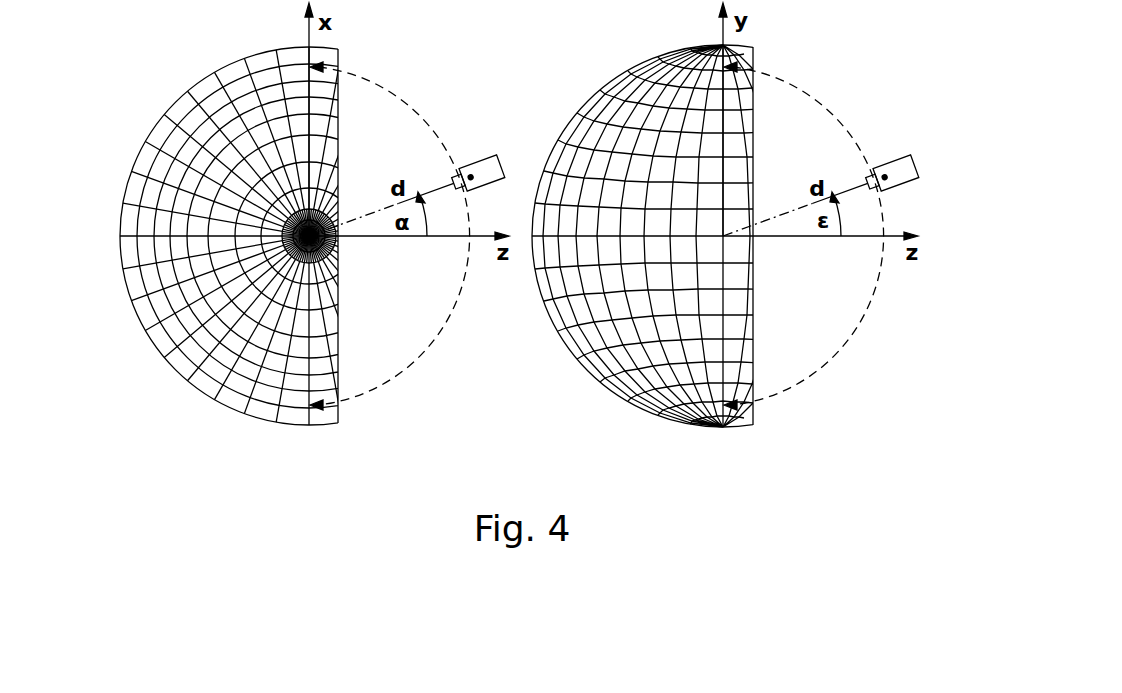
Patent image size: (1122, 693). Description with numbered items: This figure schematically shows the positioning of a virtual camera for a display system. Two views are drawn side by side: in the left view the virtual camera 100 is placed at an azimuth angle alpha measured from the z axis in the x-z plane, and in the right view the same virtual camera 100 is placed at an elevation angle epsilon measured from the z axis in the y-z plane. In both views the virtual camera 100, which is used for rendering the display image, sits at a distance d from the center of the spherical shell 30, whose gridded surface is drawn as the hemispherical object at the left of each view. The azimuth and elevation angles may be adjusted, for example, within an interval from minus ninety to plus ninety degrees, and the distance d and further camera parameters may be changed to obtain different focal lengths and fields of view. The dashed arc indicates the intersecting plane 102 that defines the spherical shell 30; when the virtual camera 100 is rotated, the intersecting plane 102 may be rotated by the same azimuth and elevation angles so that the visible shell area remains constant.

The spherical shell 30 is at (243, 403).
The virtual camera 100 is at (476, 163).
The intersecting plane 102 is at (338, 110).